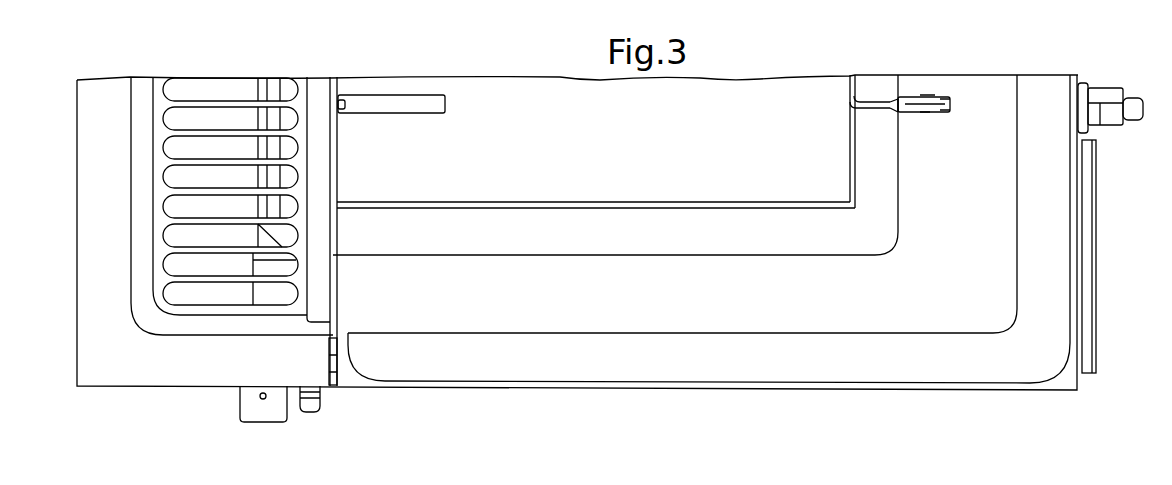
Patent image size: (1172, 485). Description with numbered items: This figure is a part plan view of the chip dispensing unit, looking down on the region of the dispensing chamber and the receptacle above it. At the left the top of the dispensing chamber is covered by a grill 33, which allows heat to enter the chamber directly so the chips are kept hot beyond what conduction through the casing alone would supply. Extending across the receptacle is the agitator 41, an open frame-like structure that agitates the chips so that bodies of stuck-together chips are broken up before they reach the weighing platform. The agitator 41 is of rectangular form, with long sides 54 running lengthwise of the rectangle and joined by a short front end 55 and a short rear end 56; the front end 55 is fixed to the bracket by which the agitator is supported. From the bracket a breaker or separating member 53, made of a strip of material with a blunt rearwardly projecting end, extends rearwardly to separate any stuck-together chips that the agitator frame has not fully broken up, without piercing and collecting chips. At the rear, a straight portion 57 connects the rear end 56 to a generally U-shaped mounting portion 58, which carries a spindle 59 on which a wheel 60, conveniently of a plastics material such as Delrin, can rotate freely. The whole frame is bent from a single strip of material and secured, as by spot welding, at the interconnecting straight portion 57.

The grill 33 is at (177, 372).
The agitator 41 is at (641, 214).
The separating member 53 is at (420, 107).
The long sides 54 is at (783, 208).
The front end 55 is at (340, 170).
The rear end 56 is at (860, 170).
The straight portion 57 is at (867, 103).
The mounting portion 58 is at (900, 97).
The spindle 59 is at (933, 95).
The wheel 60 is at (953, 102).